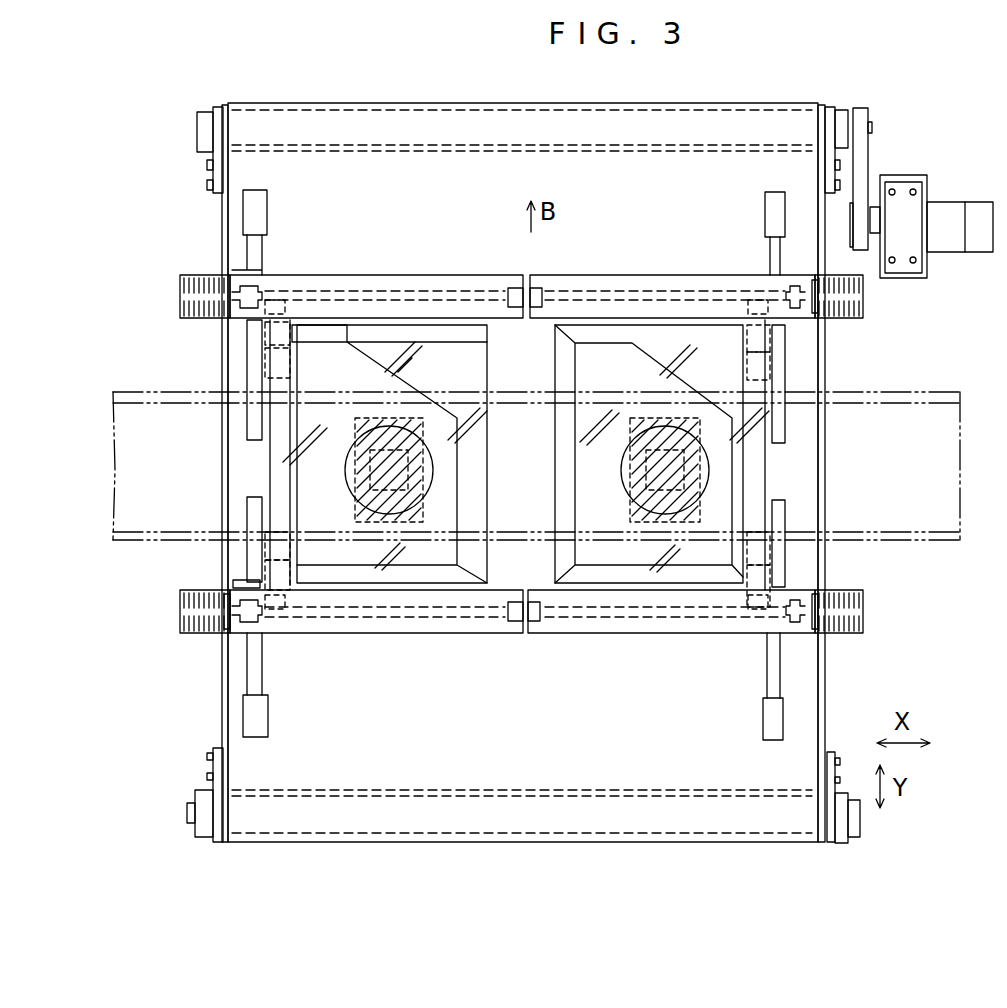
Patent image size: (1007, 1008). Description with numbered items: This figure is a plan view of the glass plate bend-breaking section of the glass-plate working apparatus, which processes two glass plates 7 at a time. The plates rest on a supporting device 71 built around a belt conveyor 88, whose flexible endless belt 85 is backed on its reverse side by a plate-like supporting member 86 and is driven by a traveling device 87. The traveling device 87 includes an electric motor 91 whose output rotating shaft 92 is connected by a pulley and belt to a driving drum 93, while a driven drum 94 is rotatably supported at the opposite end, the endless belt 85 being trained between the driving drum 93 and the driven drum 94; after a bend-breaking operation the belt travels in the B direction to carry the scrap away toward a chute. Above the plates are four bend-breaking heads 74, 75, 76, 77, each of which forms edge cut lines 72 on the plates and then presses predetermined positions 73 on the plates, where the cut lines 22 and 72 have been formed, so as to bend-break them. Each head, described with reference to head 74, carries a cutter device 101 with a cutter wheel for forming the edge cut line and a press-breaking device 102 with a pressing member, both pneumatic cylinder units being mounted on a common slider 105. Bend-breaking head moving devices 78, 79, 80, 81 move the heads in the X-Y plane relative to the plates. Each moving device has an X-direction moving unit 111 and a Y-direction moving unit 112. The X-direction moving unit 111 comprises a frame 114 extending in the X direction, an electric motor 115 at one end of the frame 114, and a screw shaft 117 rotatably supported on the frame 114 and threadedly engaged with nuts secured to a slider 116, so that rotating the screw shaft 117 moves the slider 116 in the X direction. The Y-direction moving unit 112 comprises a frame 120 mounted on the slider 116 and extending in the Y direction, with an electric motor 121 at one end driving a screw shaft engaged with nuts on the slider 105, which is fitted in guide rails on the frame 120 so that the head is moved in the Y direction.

The glass plate 7 is at (471, 330).
The cut line 22 is at (689, 370).
The supporting device 71 is at (676, 845).
The edge cut line 72 is at (359, 325).
The predetermined position 73 is at (331, 325).
The bend-breaking head 74 is at (780, 352).
The bend-breaking head 75 is at (772, 548).
The bend-breaking head 76 is at (262, 352).
The bend-breaking head 77 is at (262, 548).
The bend-breaking head moving device 78 is at (870, 318).
The bend-breaking head moving device 79 is at (868, 634).
The bend-breaking head moving device 80 is at (190, 265).
The bend-breaking head moving device 81 is at (190, 630).
The endless belt 85 is at (371, 820).
The plate-like supporting member 86 is at (224, 688).
The traveling device 87 is at (929, 172).
The belt conveyor 88 is at (822, 104).
The electric motor 91 is at (963, 204).
The output rotating shaft 92 is at (876, 180).
The driving drum 93 is at (227, 107).
The driven drum 94 is at (221, 840).
The cutter device 101 is at (262, 335).
The press-breaking device 102 is at (265, 370).
The slider 105 is at (300, 320).
The X-direction moving unit 111 is at (186, 280).
The Y-direction moving unit 112 is at (269, 188).
The frame 114 is at (390, 278).
The electric motor 115 is at (185, 296).
The slider 116 is at (816, 282).
The screw shaft 117 is at (620, 300).
The frame 120 is at (250, 431).
The electric motor 121 is at (245, 215).